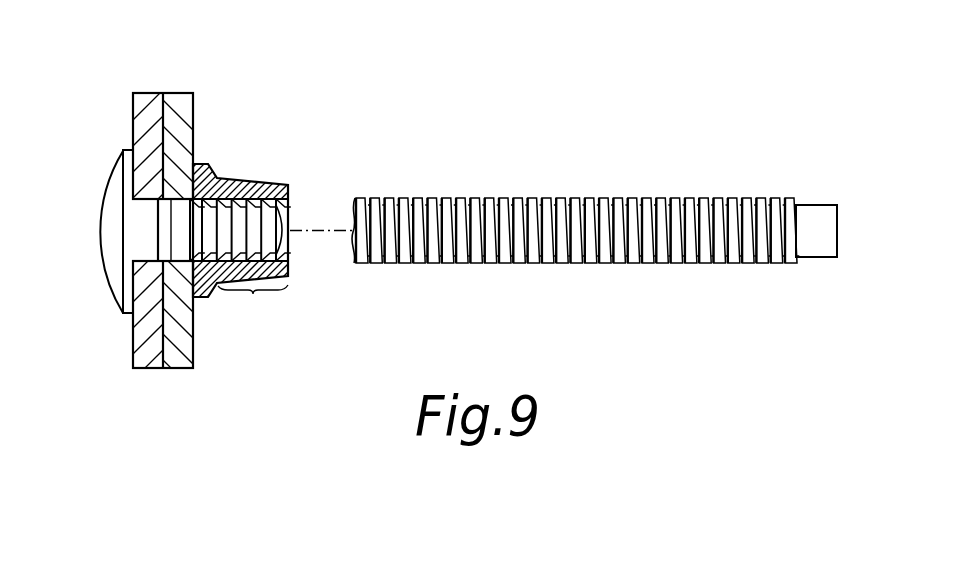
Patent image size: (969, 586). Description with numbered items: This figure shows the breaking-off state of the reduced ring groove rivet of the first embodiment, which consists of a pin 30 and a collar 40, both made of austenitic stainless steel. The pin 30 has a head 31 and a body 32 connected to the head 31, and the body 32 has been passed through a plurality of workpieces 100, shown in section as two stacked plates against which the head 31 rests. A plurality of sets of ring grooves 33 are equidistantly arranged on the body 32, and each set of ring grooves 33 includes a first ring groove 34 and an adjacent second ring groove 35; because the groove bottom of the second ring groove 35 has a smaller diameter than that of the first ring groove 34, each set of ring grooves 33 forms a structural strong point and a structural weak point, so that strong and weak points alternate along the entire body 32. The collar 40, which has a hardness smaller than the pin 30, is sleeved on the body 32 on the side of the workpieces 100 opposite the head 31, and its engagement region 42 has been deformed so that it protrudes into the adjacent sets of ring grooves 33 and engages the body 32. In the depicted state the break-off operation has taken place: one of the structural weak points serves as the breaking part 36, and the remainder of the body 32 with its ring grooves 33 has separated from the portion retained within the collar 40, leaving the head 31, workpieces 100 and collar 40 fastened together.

The workpieces 100 is at (143, 118).
The head 31 is at (107, 223).
The pin 30 is at (563, 186).
The body 32 is at (662, 232).
The sets of ring grooves 33 is at (332, 110).
The first ring groove 34 is at (230, 192).
The second ring groove 35 is at (245, 194).
The breaking part 36 is at (284, 236).
The collar 40 is at (241, 224).
The engagement region 42 is at (253, 306).